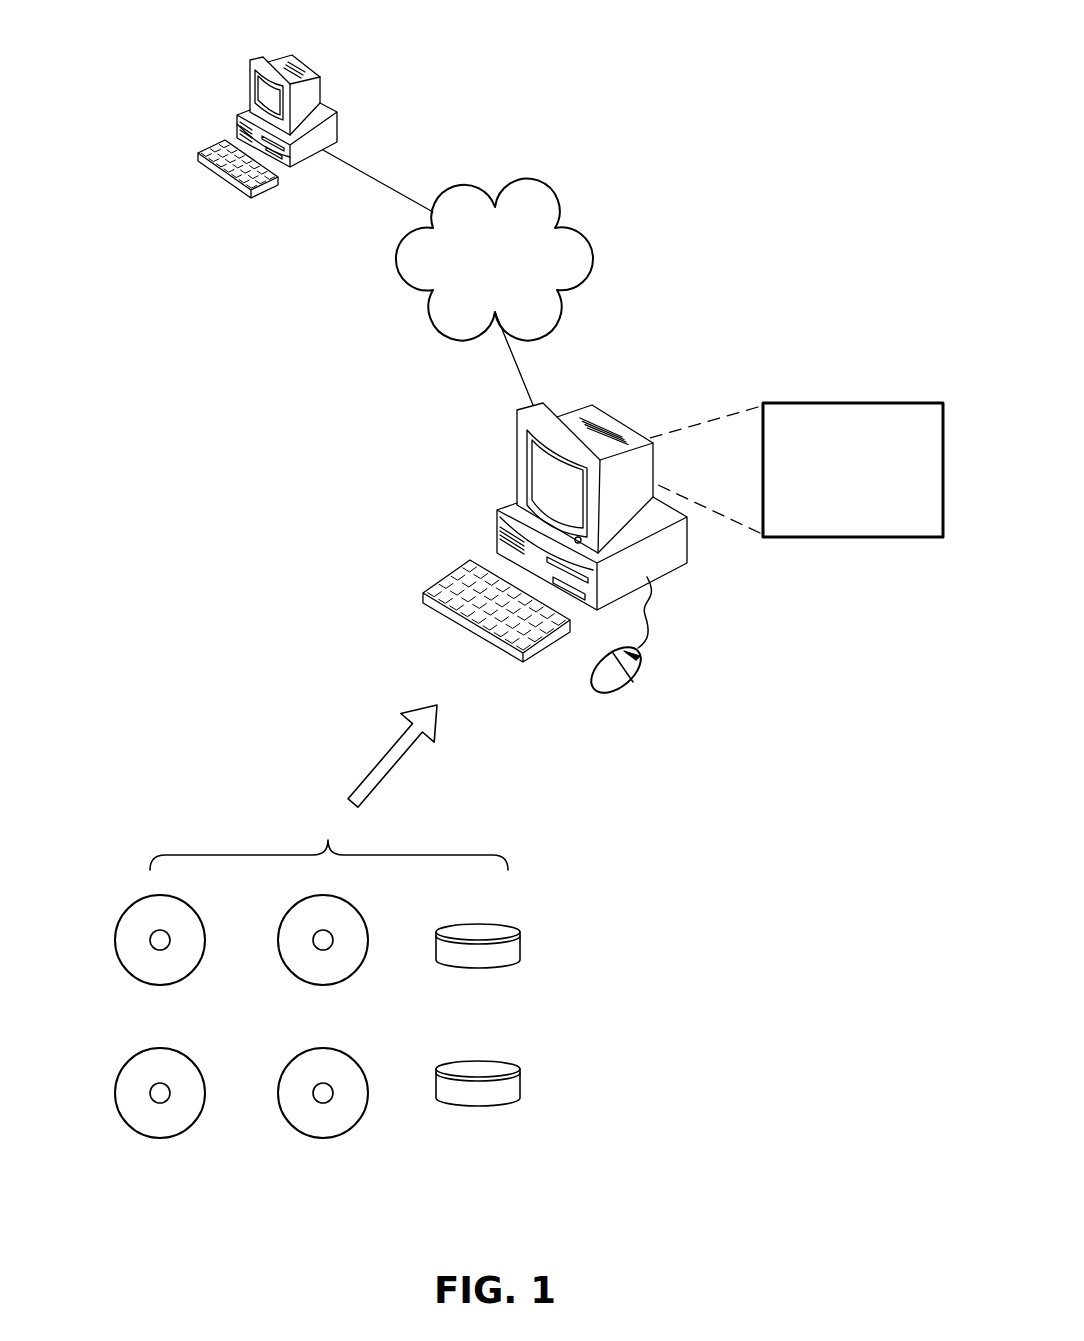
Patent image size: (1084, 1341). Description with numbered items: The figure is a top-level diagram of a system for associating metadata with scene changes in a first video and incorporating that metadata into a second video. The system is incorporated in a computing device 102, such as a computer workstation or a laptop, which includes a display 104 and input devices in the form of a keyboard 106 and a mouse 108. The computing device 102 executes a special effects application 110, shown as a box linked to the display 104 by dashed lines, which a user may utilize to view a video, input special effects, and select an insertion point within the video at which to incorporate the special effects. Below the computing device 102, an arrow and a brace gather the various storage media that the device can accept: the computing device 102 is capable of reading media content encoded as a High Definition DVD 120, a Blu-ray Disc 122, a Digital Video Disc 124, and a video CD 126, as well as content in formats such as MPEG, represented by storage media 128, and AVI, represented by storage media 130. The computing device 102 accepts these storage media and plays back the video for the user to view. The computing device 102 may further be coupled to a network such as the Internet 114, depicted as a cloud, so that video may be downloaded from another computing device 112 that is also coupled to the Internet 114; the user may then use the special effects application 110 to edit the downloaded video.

The computing device 102 is at (628, 381).
The display 104 is at (515, 478).
The keyboard 106 is at (480, 638).
The mouse 108 is at (594, 688).
The special effects application 110 is at (842, 403).
The another computing device 112 is at (317, 49).
The Internet 114 is at (494, 260).
The High Definition DVD (HD-DVD) 120 is at (133, 903).
The Blu-ray Disc 122 is at (133, 1057).
The Digital Video Disc (DVD) 124 is at (293, 907).
The video CD (VCD) 126 is at (293, 1060).
The storage media (MPG format) 128 is at (447, 925).
The storage media (AVI format) 130 is at (447, 1060).